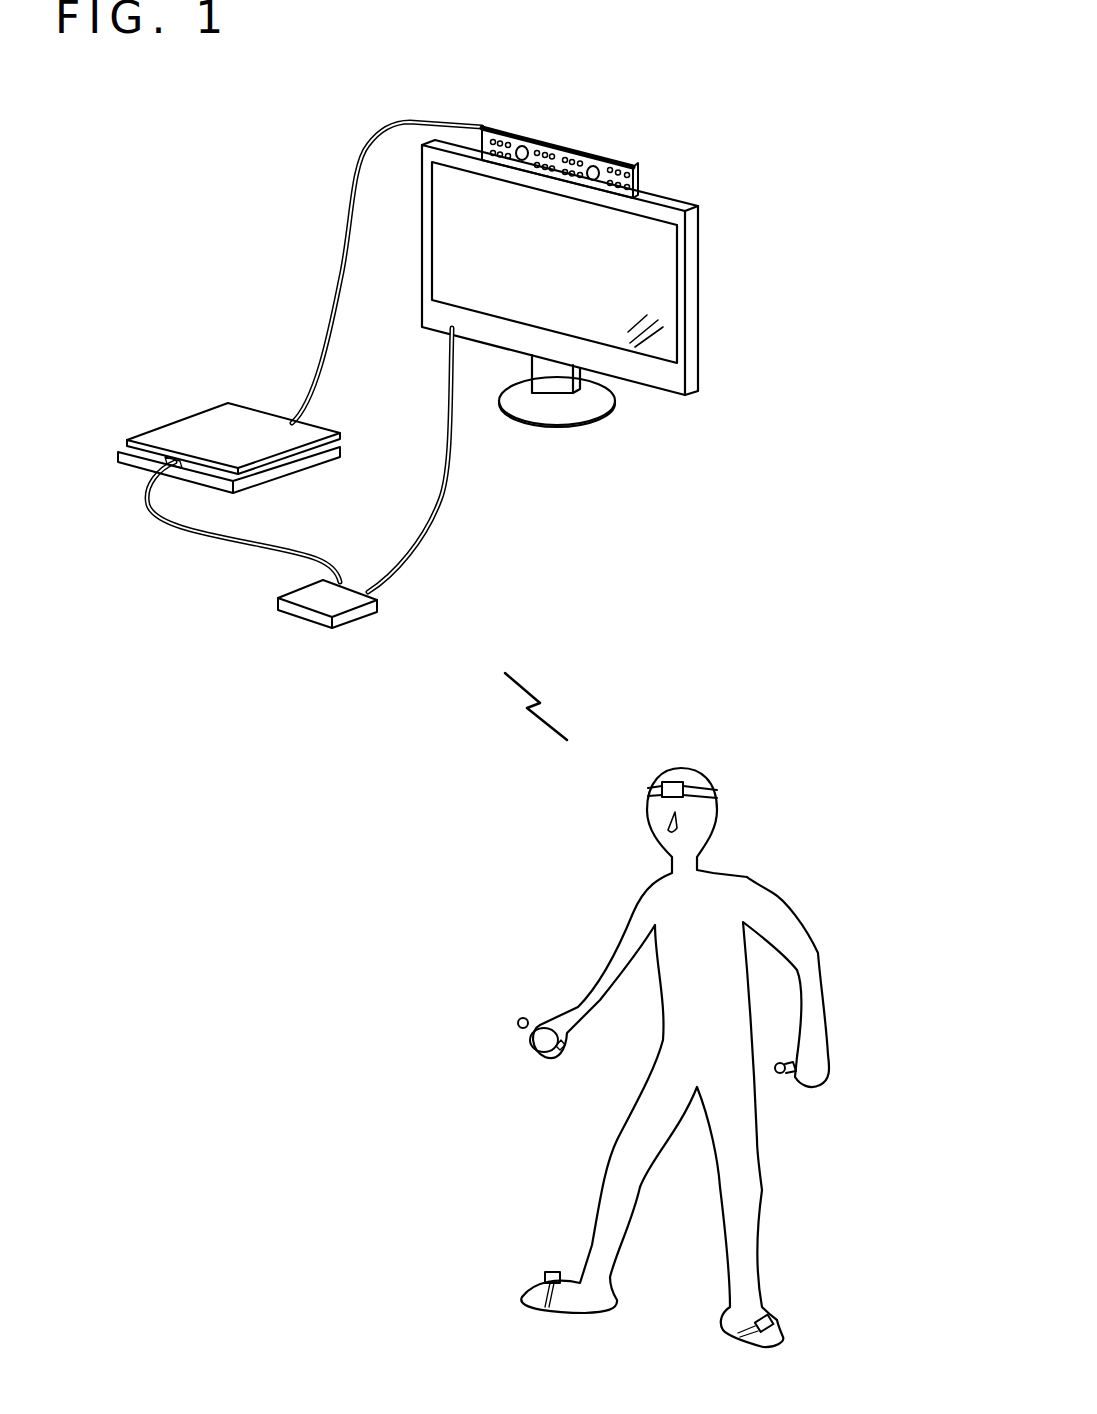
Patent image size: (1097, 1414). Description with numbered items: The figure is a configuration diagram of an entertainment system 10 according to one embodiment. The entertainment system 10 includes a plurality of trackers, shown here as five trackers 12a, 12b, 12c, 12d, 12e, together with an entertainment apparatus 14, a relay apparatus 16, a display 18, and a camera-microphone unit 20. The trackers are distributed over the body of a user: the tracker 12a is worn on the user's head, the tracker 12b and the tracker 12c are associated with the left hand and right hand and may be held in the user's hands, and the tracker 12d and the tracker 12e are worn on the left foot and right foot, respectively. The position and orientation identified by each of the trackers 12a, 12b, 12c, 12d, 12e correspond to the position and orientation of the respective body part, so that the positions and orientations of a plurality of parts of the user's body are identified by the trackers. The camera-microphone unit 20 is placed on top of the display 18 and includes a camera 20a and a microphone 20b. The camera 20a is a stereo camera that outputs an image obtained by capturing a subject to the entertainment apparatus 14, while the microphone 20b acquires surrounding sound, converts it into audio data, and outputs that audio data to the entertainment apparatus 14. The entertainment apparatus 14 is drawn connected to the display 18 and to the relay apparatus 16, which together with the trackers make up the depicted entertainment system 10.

The entertainment system 10 is at (856, 467).
The tracker 12a is at (680, 786).
The tracker 12b is at (783, 1073).
The tracker 12c is at (523, 1017).
The tracker 12d is at (764, 1318).
The tracker 12e is at (550, 1272).
The entertainment apparatus 14 is at (176, 422).
The relay apparatus 16 is at (378, 597).
The display 18 is at (697, 298).
The camera-microphone unit 20 is at (589, 156).
The camera 20a is at (520, 160).
The microphone 20b is at (548, 140).